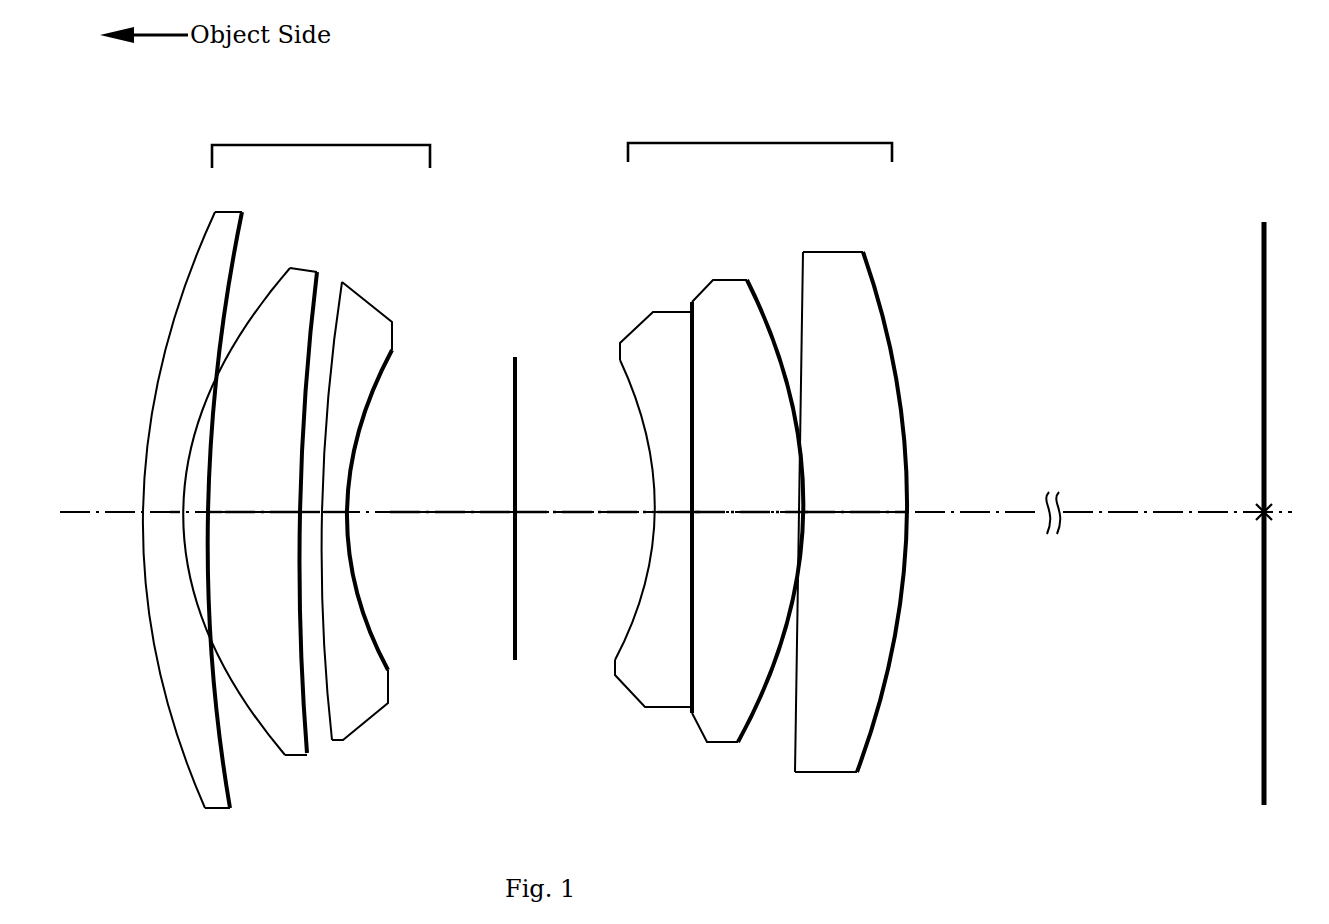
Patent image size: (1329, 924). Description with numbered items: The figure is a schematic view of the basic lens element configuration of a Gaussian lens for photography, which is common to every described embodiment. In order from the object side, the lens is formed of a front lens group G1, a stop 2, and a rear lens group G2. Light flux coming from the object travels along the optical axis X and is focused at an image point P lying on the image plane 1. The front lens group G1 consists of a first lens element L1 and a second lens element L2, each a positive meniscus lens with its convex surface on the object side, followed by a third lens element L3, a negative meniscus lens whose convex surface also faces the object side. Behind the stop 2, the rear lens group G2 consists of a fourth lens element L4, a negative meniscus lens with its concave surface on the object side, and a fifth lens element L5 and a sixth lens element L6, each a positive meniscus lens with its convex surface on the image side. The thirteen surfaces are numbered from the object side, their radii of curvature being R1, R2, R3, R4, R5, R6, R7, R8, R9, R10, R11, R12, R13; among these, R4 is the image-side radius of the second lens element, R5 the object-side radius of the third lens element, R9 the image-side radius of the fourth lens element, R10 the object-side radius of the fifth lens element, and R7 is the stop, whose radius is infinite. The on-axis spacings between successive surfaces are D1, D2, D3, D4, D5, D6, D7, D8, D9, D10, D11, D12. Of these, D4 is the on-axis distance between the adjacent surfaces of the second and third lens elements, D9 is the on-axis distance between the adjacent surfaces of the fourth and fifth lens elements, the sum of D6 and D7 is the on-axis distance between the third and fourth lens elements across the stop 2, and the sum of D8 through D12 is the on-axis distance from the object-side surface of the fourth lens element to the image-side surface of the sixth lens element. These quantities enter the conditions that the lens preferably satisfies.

The image plane 1 is at (1268, 265).
The stop 2 is at (518, 373).
The optical axis X is at (112, 515).
The image point P is at (1276, 511).
The front lens group G1 is at (267, 477).
The rear lens group G2 is at (765, 462).
The first lens element L1 is at (188, 505).
The second lens element L2 is at (250, 504).
The third lens element L3 is at (383, 505).
The fourth lens element L4 is at (636, 496).
The fifth lens element L5 is at (723, 509).
The sixth lens element L6 is at (869, 507).
The radius of curvature of surface one R1 is at (152, 638).
The radius of curvature of surface two R2 is at (233, 769).
The radius of curvature of surface three R3 is at (258, 703).
The radius of curvature of the second lens element on the image side R4 is at (313, 700).
The radius of curvature of the third lens element on the object side R5 is at (327, 722).
The radius of curvature of surface six R6 is at (370, 628).
The radius of curvature of surface seven R7 is at (512, 558).
The radius of curvature of surface eight R8 is at (642, 603).
The radius of curvature of the fourth lens element on the image side R9 is at (692, 644).
The radius of curvature of the fifth lens element on the object side R10 is at (690, 680).
The radius of curvature of surface eleven R11 is at (753, 727).
The radius of curvature of surface twelve R12 is at (792, 743).
The radius of curvature of surface thirteen R13 is at (882, 707).
The on-axis surface spacing one D1 is at (175, 511).
The on-axis surface spacing two D2 is at (214, 511).
The on-axis surface spacing three D3 is at (257, 511).
The on-axis distance between the adjacent second and third lens element surfaces D4 is at (307, 514).
The on-axis surface spacing five D5 is at (330, 511).
The on-axis surface spacing six D6 is at (423, 511).
The on-axis surface spacing seven D7 is at (540, 510).
The on-axis surface spacing eight D8 is at (673, 509).
The on-axis distance between the adjacent fourth and fifth lens element surfaces D9 is at (697, 513).
The on-axis surface spacing ten D10 is at (747, 511).
The on-axis surface spacing eleven D11 is at (809, 514).
The on-axis surface spacing twelve D12 is at (853, 511).